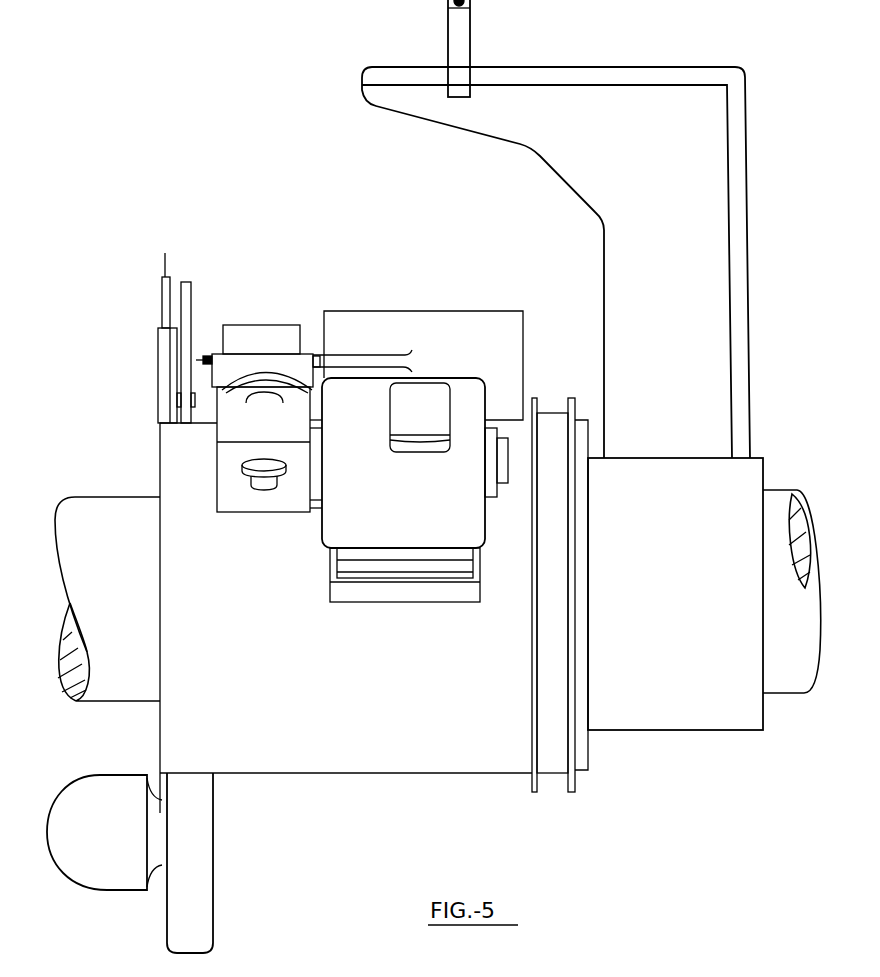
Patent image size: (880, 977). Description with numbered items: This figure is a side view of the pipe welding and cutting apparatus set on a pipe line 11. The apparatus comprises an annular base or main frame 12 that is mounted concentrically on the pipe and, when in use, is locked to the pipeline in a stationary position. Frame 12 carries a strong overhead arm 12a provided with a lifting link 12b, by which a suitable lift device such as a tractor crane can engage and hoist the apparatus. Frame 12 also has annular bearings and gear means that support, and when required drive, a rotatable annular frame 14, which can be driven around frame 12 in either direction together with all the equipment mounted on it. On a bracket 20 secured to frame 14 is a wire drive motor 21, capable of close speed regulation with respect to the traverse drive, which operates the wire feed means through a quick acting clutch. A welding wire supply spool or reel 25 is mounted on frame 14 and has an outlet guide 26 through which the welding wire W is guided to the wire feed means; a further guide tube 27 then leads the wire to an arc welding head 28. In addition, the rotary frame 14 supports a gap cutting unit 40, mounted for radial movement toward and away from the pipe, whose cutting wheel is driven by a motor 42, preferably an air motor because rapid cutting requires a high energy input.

The pipe line 11 is at (125, 504).
The annular base or main frame 12 is at (663, 720).
The overhead arm 12a is at (737, 128).
The lifting link 12b is at (462, 33).
The rotatable annular frame 14 is at (372, 760).
The bracket 20 is at (336, 568).
The wire drive motor 21 is at (332, 526).
The welding wire supply spool or reel 25 is at (407, 322).
The outlet guide 26 is at (362, 360).
The guide tube 27 is at (162, 296).
The arc welding head 28 is at (165, 368).
The gap cutting unit 40 is at (198, 861).
The motor 42 is at (102, 873).
The wire W is at (164, 257).